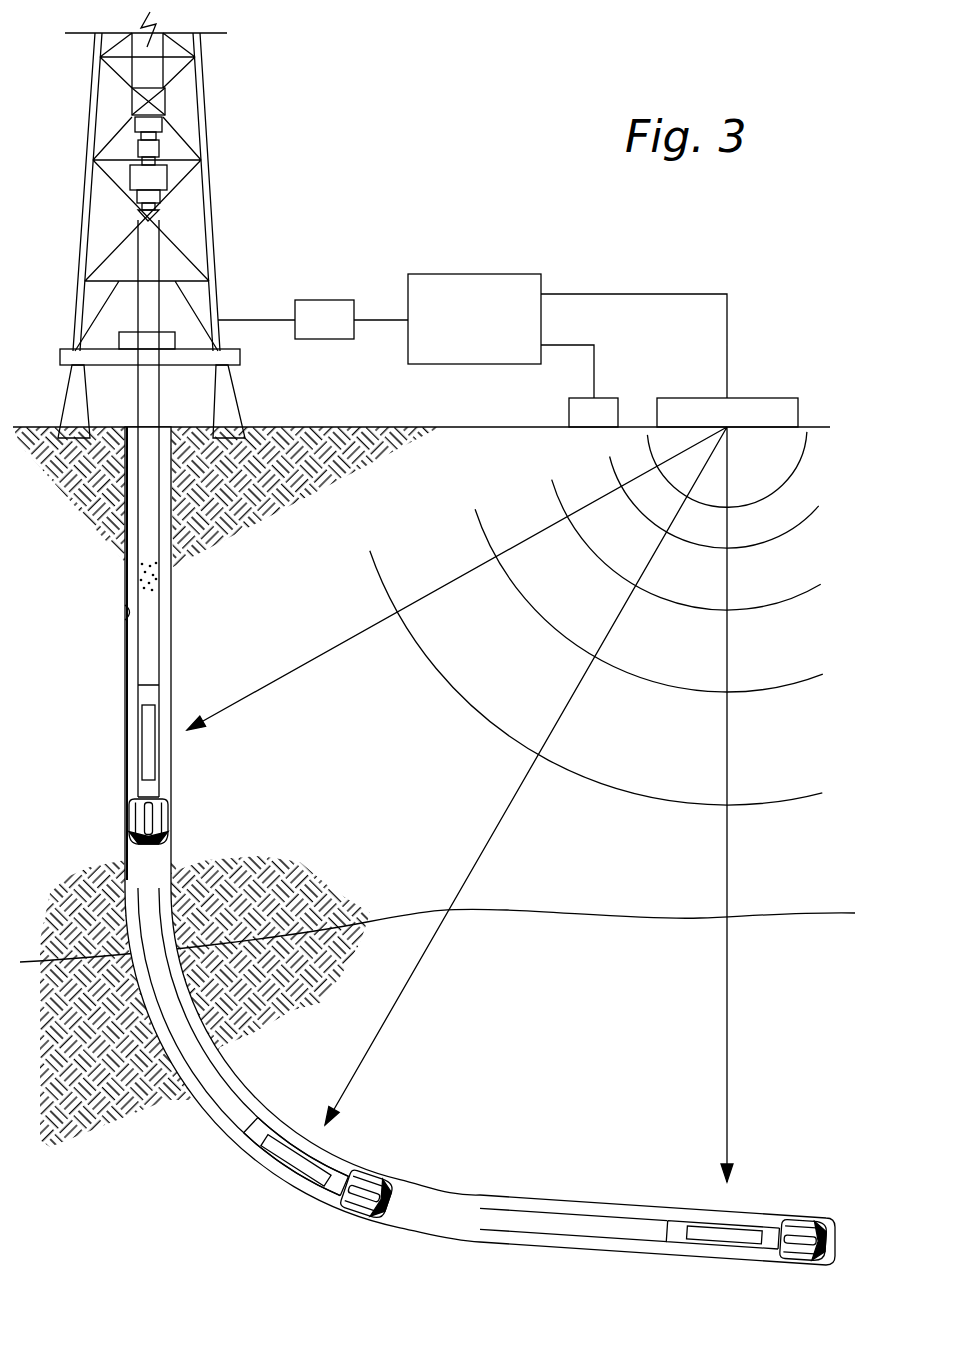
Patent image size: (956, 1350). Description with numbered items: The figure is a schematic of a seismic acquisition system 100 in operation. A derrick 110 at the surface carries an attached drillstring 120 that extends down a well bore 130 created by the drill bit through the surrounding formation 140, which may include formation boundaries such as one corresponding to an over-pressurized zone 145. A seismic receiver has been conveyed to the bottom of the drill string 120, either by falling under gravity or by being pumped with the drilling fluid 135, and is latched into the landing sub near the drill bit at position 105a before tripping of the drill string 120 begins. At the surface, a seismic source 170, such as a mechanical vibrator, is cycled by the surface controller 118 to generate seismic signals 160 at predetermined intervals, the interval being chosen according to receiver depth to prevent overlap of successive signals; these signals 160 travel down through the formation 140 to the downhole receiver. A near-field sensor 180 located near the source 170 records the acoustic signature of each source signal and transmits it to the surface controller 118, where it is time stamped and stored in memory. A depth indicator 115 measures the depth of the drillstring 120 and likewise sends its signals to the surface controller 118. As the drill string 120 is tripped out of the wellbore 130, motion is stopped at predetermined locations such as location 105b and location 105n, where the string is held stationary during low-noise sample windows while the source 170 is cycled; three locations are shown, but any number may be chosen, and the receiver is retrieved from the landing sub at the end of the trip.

The system 100 is at (500, 143).
The position 105a is at (743, 1246).
The location 105b is at (304, 1195).
The location 105n is at (152, 761).
The derrick 110 is at (205, 105).
The depth indicator 115 is at (318, 300).
The surface controller 118 is at (473, 274).
The drillstring 120 is at (125, 638).
The well bore 130 is at (126, 605).
The drilling fluid 135 is at (140, 573).
The formation 140 is at (828, 866).
The over-pressurized zone 145 is at (830, 1053).
The seismic signals 160 is at (830, 647).
The seismic source 170 is at (773, 398).
The near-field sensor 180 is at (607, 398).